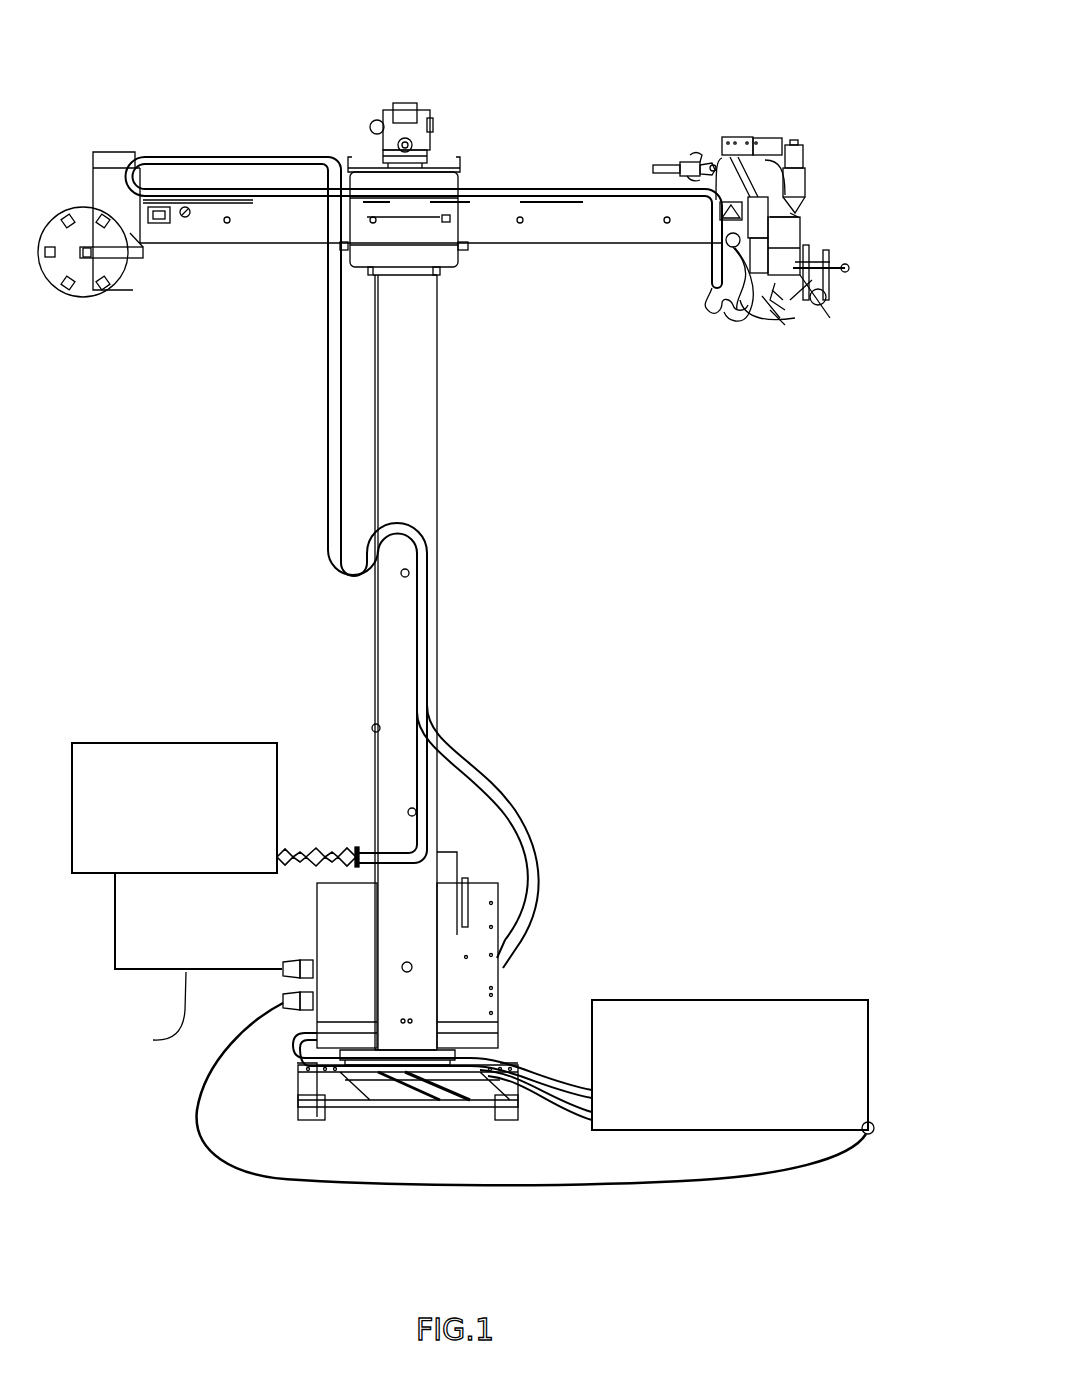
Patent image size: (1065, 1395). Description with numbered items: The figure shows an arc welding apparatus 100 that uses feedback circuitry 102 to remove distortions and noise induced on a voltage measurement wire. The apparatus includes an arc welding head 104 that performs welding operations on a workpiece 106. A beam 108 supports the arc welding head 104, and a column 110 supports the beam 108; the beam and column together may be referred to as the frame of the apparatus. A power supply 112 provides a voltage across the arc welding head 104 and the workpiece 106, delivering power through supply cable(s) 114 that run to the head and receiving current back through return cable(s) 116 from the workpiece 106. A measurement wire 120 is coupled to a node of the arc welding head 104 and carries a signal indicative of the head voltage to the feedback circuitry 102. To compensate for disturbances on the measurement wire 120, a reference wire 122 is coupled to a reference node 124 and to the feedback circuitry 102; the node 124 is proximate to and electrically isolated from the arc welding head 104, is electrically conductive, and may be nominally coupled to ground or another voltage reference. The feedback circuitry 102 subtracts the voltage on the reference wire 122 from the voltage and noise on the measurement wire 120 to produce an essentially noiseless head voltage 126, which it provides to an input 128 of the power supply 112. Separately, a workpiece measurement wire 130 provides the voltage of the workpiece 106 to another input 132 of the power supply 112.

The arc welding apparatus 100 is at (203, 60).
The feedback circuitry 102 is at (177, 743).
The arc welding head 104 is at (812, 124).
The workpiece 106 is at (810, 1000).
The beam 108 is at (617, 215).
The column 110 is at (438, 412).
The power supply 112 is at (317, 943).
The supply cable(s) 114 is at (427, 575).
The return cable(s) 116 is at (538, 1103).
The measurement wire 120 is at (748, 315).
The reference wire 122 is at (712, 288).
The reference node 124 is at (713, 277).
The noiseless head voltage 126 is at (105, 1020).
The input 128 is at (287, 980).
The workpiece measurement wire 130 is at (796, 1172).
The input 132 is at (287, 1010).